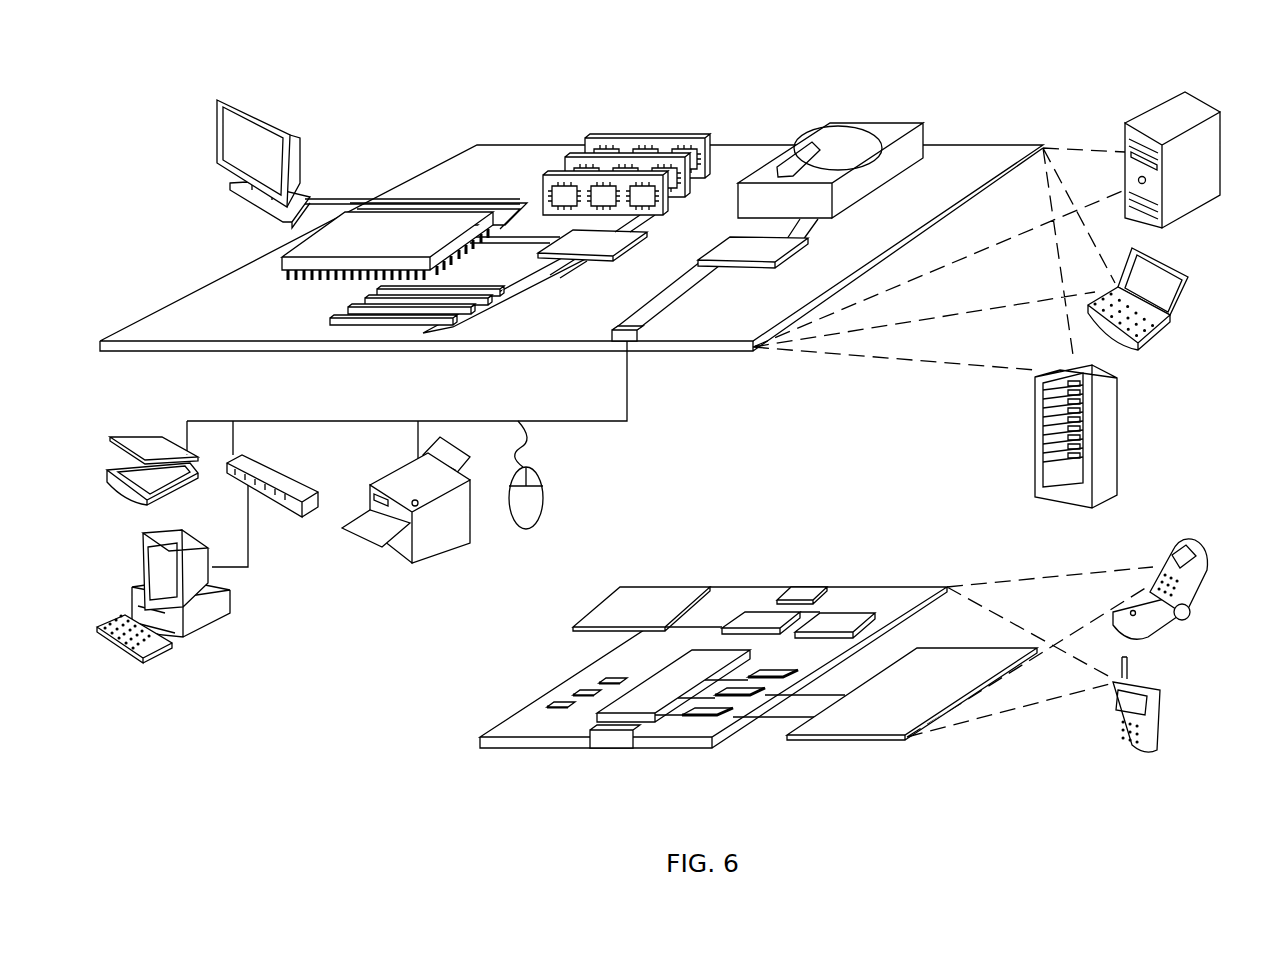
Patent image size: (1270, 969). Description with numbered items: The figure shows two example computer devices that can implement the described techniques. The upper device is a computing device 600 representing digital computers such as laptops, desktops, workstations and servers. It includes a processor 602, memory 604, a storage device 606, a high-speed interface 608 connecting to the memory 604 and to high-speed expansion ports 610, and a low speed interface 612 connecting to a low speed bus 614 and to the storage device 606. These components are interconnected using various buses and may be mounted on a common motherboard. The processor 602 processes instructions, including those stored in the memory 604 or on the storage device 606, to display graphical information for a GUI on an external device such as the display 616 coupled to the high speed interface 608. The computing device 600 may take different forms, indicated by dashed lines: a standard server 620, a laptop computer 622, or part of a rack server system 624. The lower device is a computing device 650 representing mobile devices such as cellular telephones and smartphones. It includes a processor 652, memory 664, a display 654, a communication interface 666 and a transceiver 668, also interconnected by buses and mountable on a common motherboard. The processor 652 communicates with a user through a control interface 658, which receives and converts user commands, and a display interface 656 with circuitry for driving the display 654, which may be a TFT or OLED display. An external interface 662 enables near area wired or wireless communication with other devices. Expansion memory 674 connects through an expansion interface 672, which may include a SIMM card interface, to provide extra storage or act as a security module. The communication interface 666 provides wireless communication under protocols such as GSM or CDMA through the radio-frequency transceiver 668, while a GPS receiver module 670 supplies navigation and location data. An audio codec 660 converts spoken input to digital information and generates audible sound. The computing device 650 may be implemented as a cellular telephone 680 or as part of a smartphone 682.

The computing device 600 is at (401, 119).
The processor 602 is at (290, 260).
The memory 604 is at (590, 138).
The storage device 606 is at (827, 127).
The high-speed interface 608 is at (570, 243).
The high-speed expansion ports 610 is at (340, 313).
The low speed interface 612 is at (735, 238).
The low speed bus 614 is at (638, 341).
The display 616 is at (223, 93).
The standard server 620 is at (1125, 132).
The laptop computer 622 is at (1188, 272).
The rack server system 624 is at (1035, 460).
The computing device 650 is at (457, 743).
The processor 652 is at (647, 707).
The display 654 is at (875, 725).
The display interface 656 is at (713, 715).
The control interface 658 is at (743, 693).
The audio codec 660 is at (770, 675).
The external interface 662 is at (612, 737).
The memory 664 is at (565, 703).
The communication interface 666 is at (760, 618).
The transceiver 668 is at (837, 620).
The GPS receiver module 670 is at (810, 588).
The expansion interface 672 is at (694, 596).
The expansion memory 674 is at (622, 599).
The cellular telephone 680 is at (1170, 548).
The smartphone 682 is at (1113, 708).